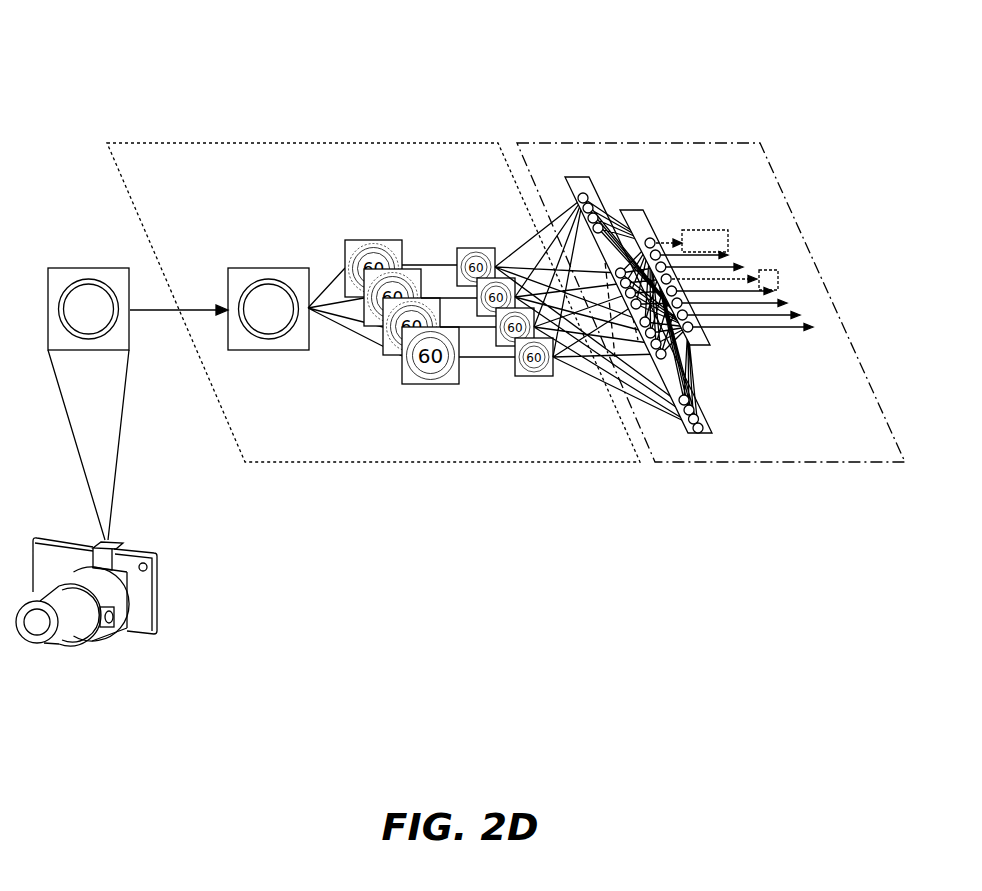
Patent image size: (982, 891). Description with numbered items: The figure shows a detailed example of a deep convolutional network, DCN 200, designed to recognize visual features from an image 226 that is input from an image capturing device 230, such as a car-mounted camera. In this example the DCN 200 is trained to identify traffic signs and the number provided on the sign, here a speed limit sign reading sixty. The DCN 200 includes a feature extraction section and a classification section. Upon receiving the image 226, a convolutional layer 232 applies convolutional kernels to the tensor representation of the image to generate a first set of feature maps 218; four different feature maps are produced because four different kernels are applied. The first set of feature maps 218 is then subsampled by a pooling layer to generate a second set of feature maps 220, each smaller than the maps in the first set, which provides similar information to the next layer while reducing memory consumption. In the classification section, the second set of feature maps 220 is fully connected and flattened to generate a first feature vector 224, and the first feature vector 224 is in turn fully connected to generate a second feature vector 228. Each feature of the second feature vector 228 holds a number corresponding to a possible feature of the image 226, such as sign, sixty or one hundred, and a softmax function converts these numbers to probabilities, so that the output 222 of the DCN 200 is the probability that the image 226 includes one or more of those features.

The deep convolutional network 200 is at (170, 102).
The image 226 is at (83, 268).
The convolutional layer 232 is at (263, 268).
The first set of feature maps 218 is at (368, 225).
The second set of feature maps 220 is at (466, 226).
The first feature vector 224 is at (575, 177).
The output 222 is at (692, 190).
The second feature vector 228 is at (710, 338).
The image capturing device 230 is at (85, 548).